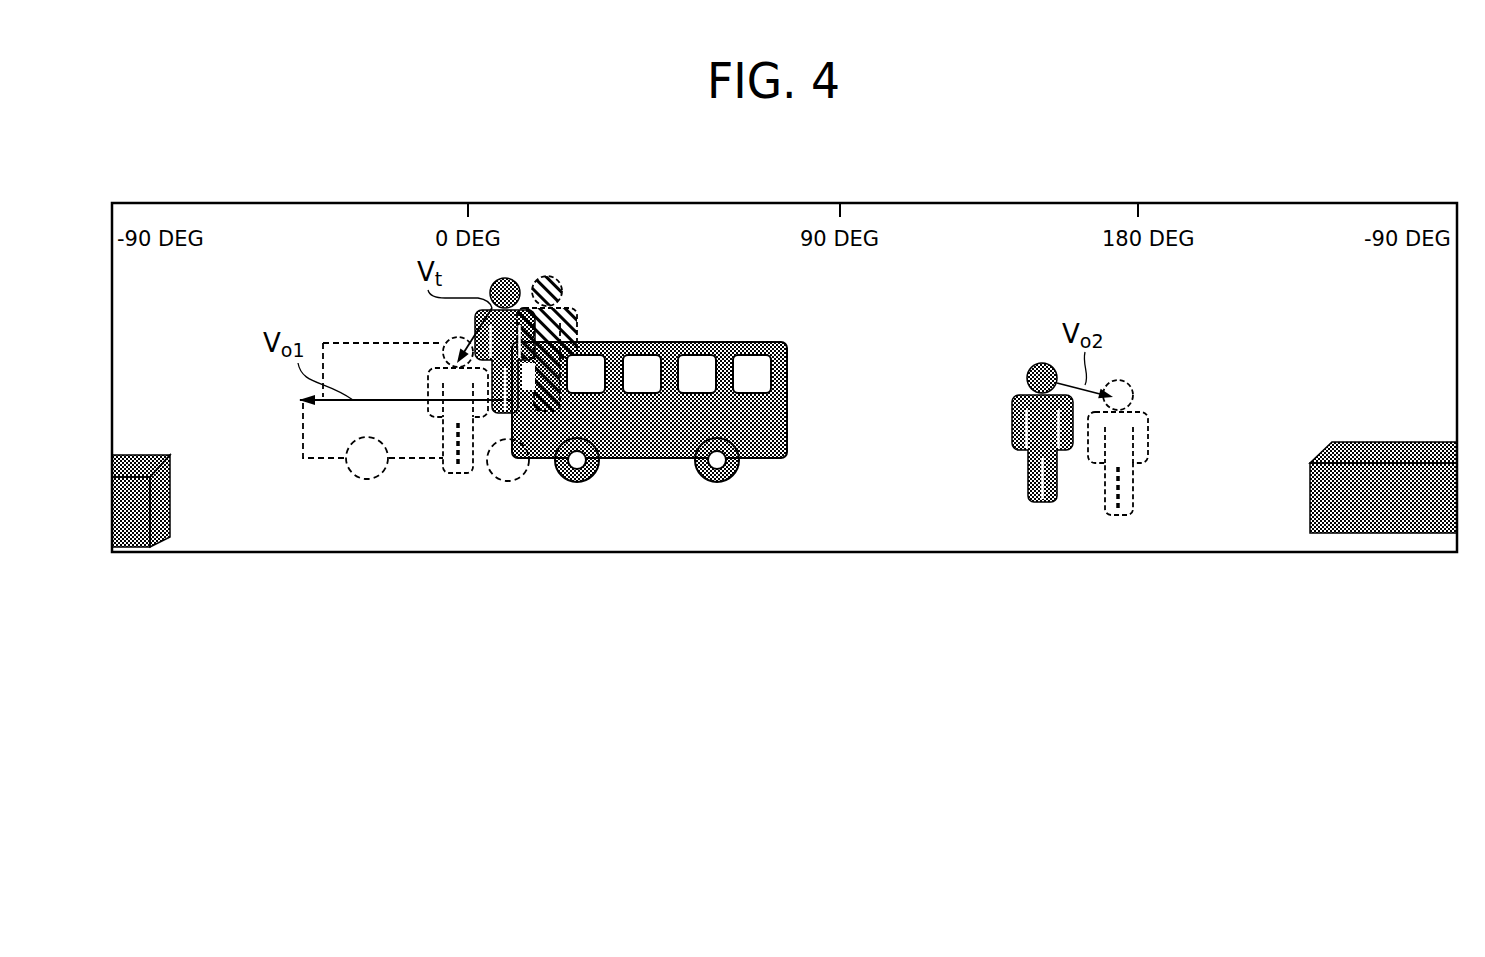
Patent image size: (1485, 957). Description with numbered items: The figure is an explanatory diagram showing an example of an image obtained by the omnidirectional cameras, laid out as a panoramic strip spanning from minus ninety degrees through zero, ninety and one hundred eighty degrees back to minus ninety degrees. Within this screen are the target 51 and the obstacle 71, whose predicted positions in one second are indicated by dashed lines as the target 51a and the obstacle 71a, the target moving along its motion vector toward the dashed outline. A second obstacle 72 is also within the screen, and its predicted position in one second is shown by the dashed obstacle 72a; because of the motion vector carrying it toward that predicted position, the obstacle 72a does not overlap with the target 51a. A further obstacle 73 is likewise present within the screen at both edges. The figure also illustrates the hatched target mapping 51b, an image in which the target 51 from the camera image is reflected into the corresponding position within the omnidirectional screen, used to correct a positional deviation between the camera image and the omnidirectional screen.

The target 51 is at (512, 286).
The target 51a is at (448, 475).
The target mapping 51b is at (560, 298).
The obstacle 71 is at (787, 400).
The obstacle 71a is at (320, 463).
The obstacle 72 is at (1012, 425).
The obstacle 72a is at (1148, 437).
The obstacle 73 is at (146, 455).